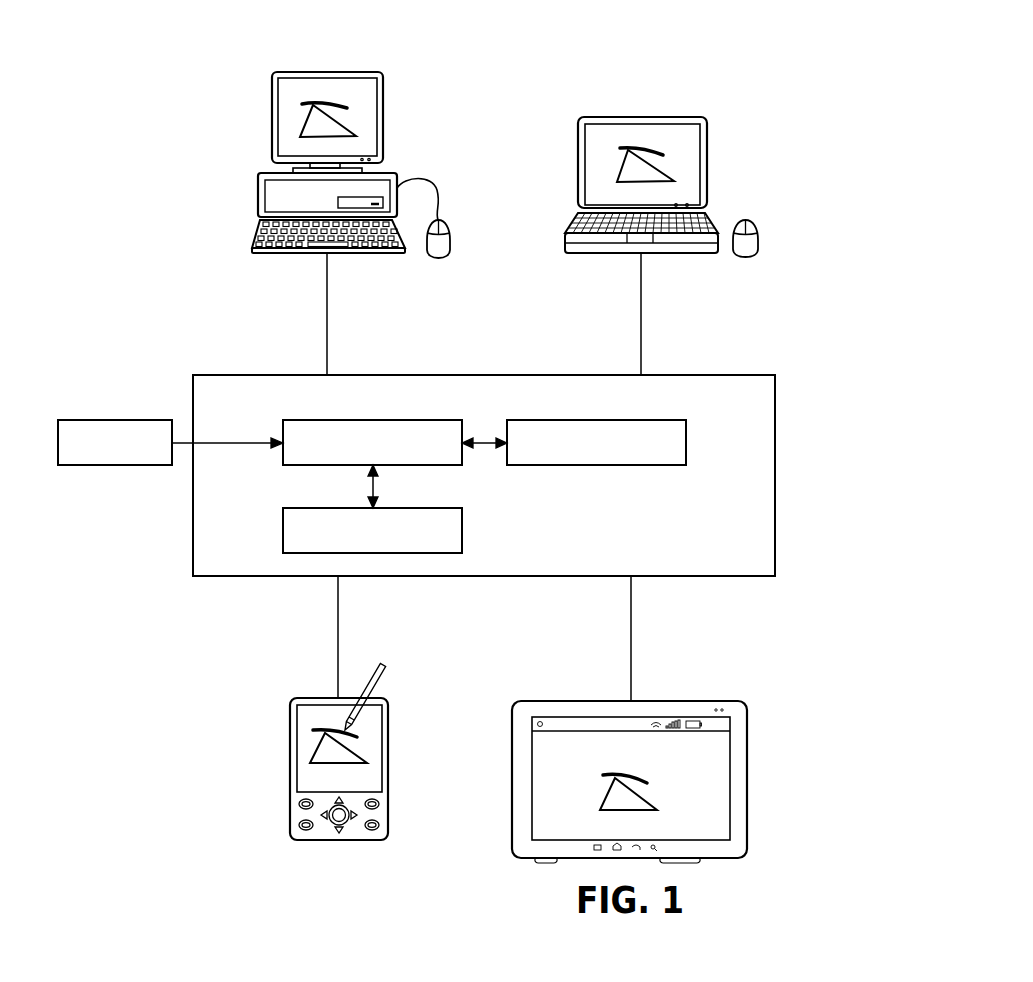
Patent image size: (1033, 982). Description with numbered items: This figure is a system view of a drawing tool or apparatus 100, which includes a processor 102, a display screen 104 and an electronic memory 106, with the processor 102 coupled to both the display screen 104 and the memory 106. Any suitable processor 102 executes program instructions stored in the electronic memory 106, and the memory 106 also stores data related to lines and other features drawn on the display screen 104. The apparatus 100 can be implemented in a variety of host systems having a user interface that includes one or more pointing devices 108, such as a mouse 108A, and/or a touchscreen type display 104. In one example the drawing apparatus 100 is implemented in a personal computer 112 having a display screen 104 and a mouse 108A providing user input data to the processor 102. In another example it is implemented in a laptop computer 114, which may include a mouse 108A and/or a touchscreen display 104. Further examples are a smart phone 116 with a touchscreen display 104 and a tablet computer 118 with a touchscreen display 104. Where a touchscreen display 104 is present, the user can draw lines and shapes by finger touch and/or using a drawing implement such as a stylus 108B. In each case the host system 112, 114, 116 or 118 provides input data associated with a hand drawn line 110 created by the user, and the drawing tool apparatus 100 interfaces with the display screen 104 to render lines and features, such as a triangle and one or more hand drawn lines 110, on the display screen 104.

The drawing tool apparatus 100 is at (414, 369).
The processor 102 is at (283, 430).
The display screen 104 is at (302, 90).
The electronic memory 106 is at (283, 543).
The pointing device 108 is at (115, 418).
The mouse 108A is at (451, 238).
The stylus 108B is at (384, 677).
The hand drawn line 110 is at (333, 100).
The personal computer 112 is at (264, 117).
The laptop computer 114 is at (707, 166).
The smart phone 116 is at (282, 735).
The tablet computer 118 is at (677, 701).